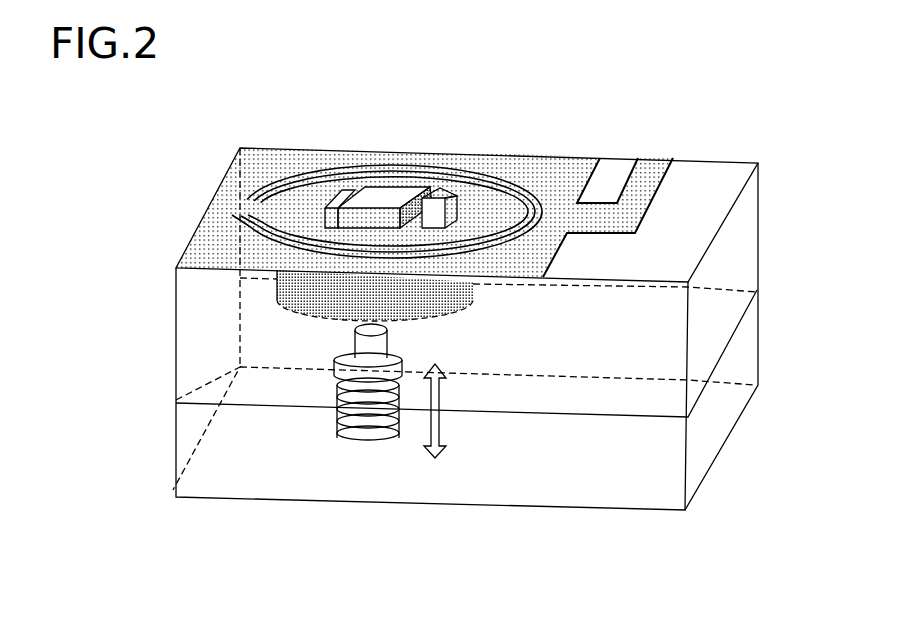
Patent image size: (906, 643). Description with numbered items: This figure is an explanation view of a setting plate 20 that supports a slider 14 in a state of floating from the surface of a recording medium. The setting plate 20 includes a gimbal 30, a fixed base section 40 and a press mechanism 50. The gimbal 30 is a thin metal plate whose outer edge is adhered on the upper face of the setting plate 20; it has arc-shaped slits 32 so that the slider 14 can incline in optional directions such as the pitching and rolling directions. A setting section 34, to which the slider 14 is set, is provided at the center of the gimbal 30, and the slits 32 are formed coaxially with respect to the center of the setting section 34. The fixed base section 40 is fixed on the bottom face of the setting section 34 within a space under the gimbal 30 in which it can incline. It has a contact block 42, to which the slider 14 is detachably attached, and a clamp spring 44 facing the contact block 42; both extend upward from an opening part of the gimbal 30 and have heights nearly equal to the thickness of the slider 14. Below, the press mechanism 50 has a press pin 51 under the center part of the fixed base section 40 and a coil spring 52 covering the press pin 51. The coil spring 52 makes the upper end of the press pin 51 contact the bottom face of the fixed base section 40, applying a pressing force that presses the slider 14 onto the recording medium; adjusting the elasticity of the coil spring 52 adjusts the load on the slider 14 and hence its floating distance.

The slider 14 is at (393, 190).
The setting plate 20 is at (692, 170).
The gimbal 30 is at (280, 165).
The arc-shaped slits 32 is at (243, 200).
The setting section 34 is at (480, 203).
The fixed base section 40 is at (300, 288).
The contact block 42 is at (345, 190).
The clamp spring 44 is at (447, 190).
The press mechanism 50 is at (383, 466).
The press pin 51 is at (365, 347).
The coil spring 52 is at (378, 440).